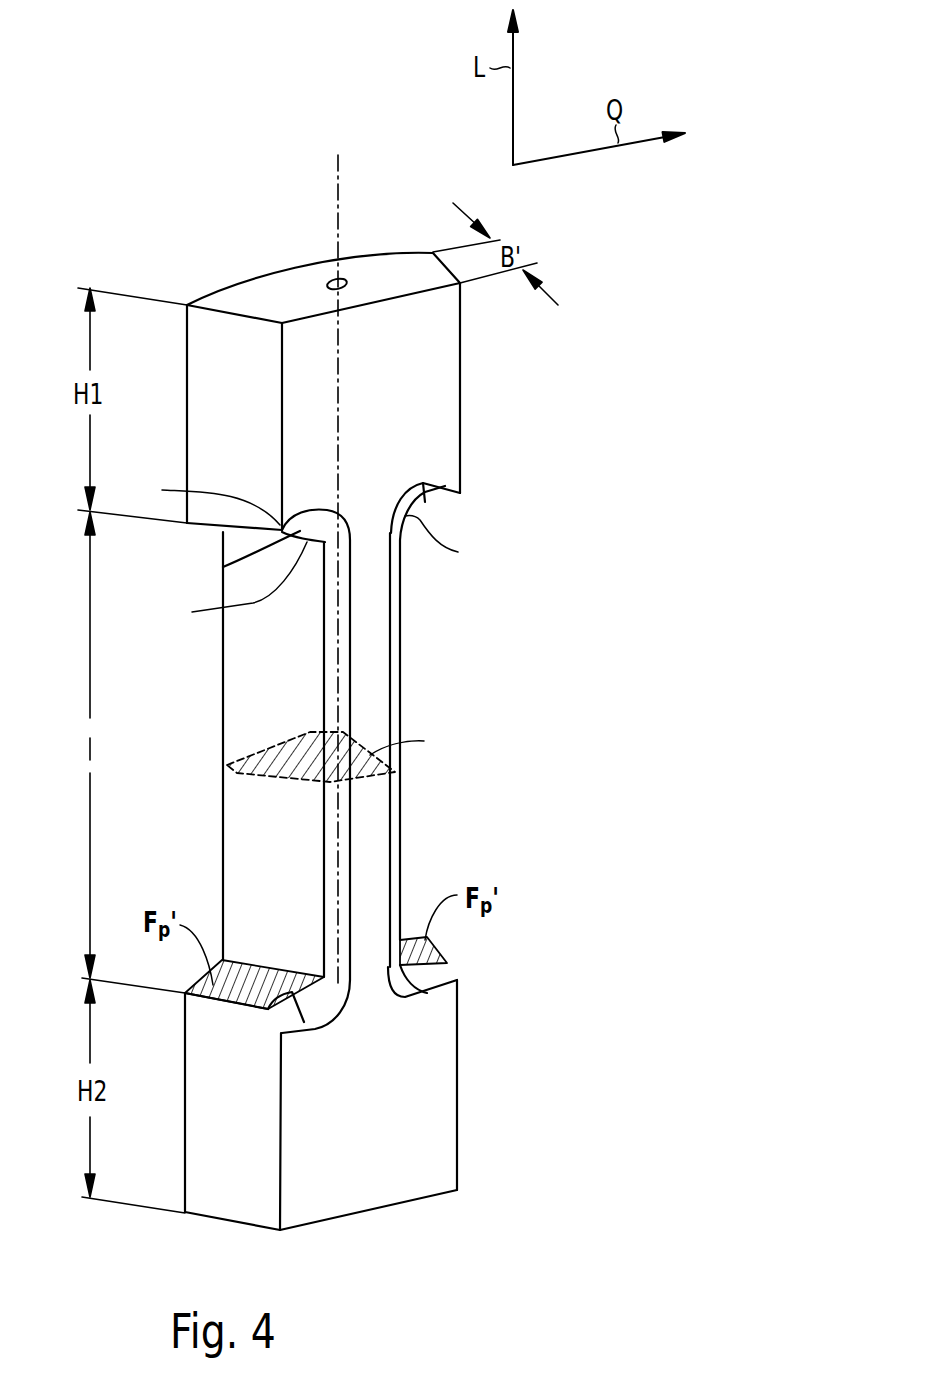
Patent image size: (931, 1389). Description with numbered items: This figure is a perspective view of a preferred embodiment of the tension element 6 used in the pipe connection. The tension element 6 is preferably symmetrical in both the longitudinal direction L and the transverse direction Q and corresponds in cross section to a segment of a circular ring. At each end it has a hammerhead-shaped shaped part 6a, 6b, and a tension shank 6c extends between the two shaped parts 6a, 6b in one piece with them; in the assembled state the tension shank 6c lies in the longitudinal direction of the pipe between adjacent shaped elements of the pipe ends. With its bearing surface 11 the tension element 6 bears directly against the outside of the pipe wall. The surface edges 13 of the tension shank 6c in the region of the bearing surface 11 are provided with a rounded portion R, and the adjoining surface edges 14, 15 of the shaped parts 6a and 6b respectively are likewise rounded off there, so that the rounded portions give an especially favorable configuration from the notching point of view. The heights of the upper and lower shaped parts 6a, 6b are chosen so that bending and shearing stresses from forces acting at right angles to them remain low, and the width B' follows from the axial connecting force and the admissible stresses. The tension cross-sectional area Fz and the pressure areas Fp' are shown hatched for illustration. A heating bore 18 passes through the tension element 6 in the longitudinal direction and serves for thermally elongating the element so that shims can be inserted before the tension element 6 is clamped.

The tension element 6 is at (460, 360).
The shaped part 6a is at (357, 375).
The shaped part 6b is at (378, 1173).
The tension shank 6c is at (262, 838).
The bearing surface 11 is at (370, 665).
The surface edges 13 is at (333, 638).
The surface edges 14 is at (223, 567).
The surface edges 15 is at (315, 1031).
The heating bore 18 is at (337, 280).